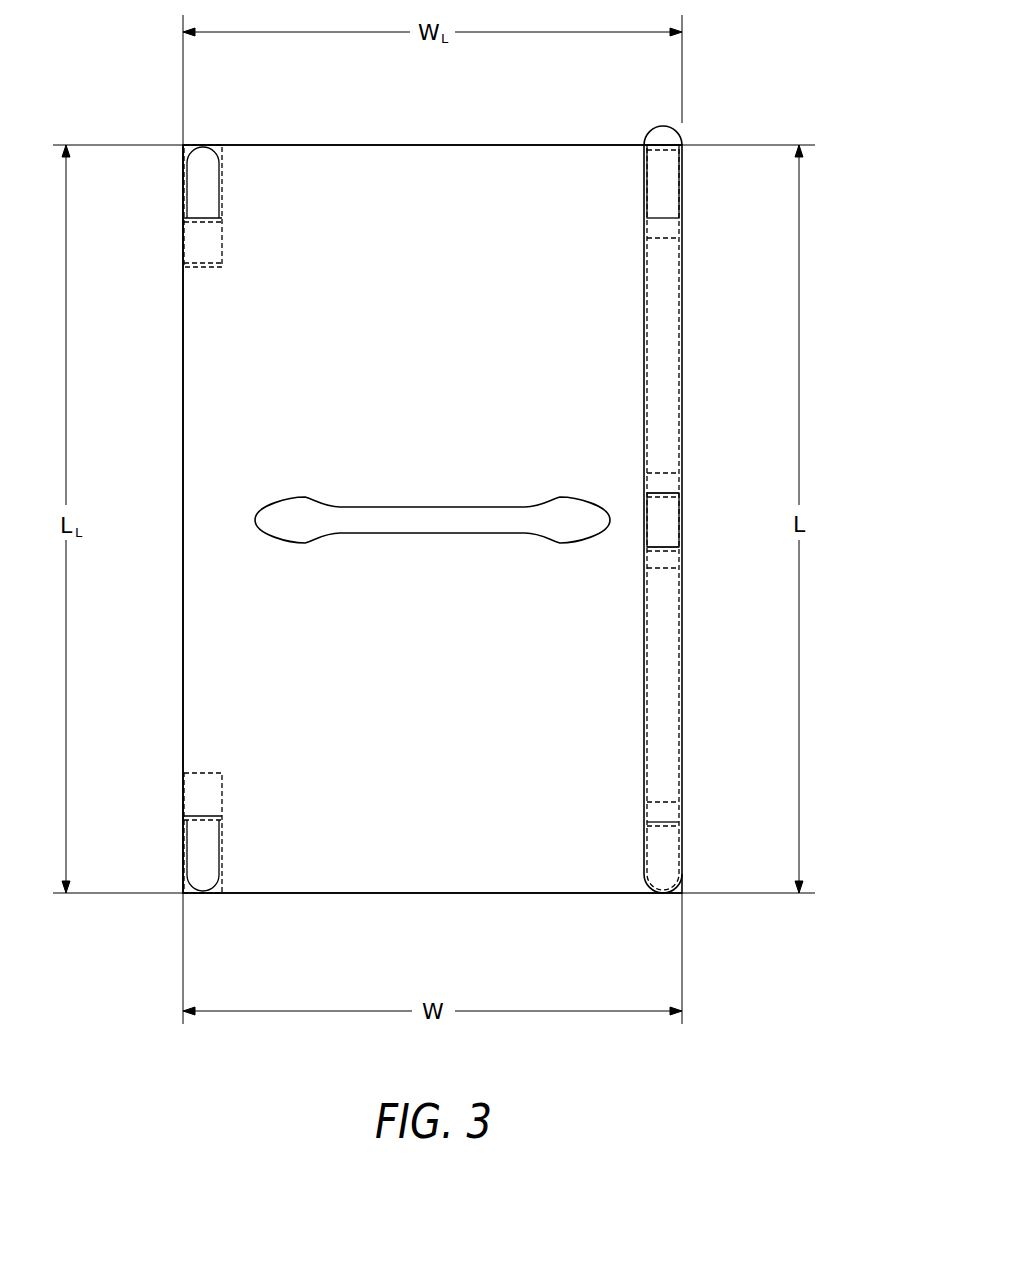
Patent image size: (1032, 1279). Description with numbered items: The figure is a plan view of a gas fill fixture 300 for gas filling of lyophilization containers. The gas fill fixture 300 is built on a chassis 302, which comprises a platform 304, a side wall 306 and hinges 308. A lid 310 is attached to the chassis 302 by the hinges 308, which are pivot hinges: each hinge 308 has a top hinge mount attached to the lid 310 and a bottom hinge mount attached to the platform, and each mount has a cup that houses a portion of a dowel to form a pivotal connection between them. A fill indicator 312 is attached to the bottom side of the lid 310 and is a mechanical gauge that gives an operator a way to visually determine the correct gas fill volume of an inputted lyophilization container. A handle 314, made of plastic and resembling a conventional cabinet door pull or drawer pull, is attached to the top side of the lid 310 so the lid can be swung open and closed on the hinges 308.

The gas fill fixture 300 is at (110, 84).
The chassis 302 is at (183, 520).
The platform 304 is at (436, 862).
The side wall 306 is at (661, 523).
The hinges 308 is at (203, 210).
The lid 310 is at (428, 145).
The fill indicator 312 is at (665, 198).
The handle 314 is at (429, 507).